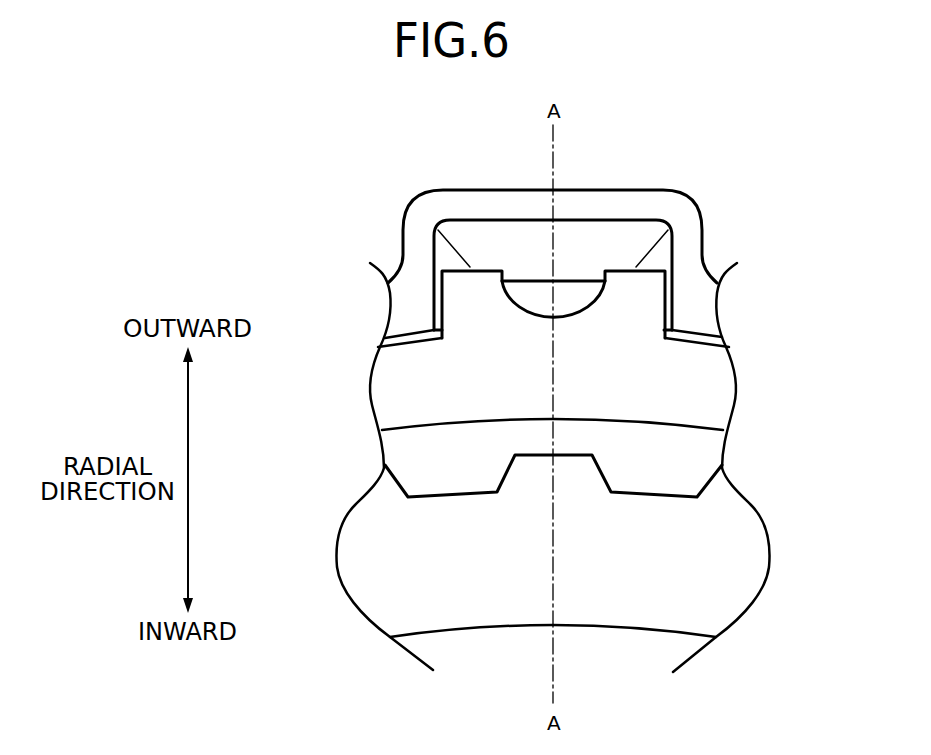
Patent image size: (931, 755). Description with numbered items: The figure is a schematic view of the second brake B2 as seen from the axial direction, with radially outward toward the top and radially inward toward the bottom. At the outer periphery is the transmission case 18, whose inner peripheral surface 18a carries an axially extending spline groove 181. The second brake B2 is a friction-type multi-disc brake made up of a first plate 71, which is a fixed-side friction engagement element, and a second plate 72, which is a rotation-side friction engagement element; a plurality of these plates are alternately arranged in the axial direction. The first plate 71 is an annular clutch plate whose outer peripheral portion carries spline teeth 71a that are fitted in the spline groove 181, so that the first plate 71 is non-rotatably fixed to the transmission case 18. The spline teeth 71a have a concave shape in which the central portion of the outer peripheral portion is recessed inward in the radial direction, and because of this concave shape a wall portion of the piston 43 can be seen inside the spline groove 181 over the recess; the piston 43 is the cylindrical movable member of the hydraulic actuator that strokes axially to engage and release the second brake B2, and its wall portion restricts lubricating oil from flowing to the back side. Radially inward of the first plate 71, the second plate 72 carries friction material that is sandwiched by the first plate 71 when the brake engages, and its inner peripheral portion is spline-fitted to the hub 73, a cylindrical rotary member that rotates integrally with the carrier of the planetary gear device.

The transmission case 18 is at (451, 191).
The inner peripheral surface 18a is at (520, 232).
The spline groove 181 is at (592, 232).
The piston 43 is at (532, 300).
The spline teeth 71a is at (632, 302).
The first plate 71 is at (690, 388).
The second plate 72 is at (690, 455).
The hub 73 is at (712, 575).
The second brake B2 is at (341, 469).